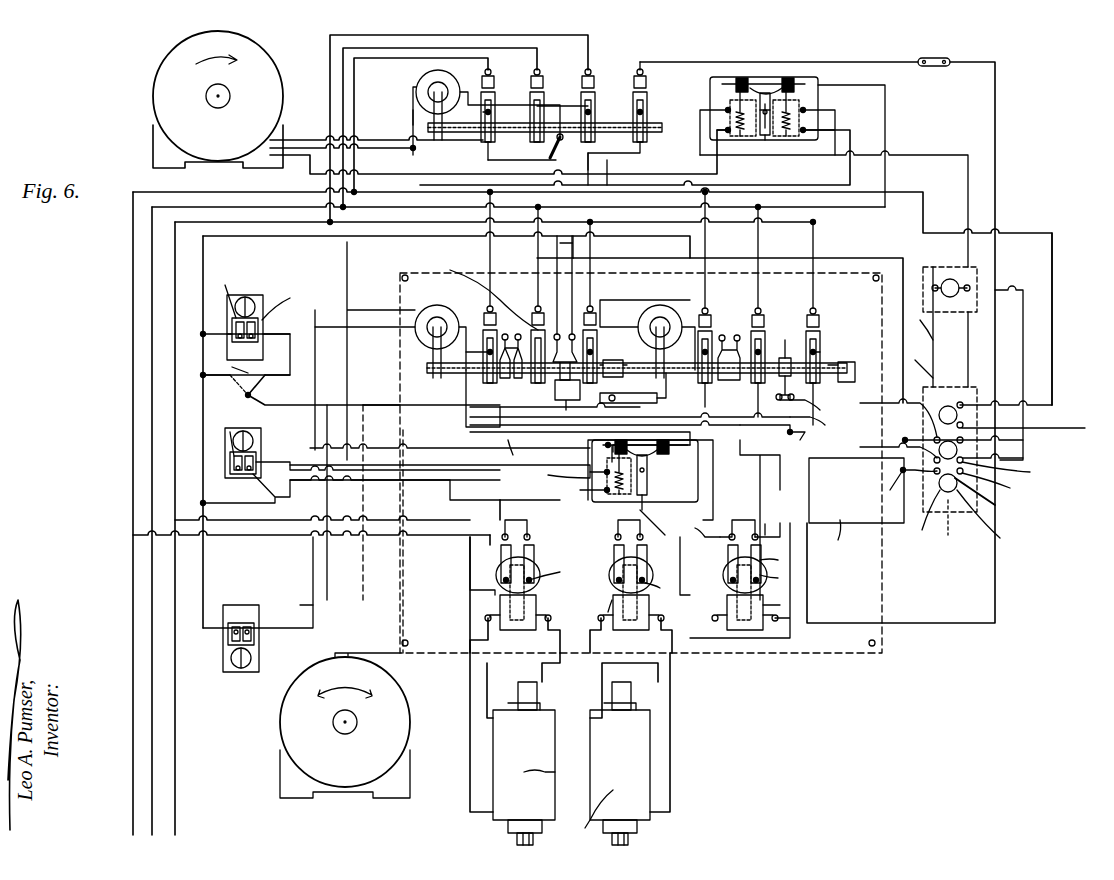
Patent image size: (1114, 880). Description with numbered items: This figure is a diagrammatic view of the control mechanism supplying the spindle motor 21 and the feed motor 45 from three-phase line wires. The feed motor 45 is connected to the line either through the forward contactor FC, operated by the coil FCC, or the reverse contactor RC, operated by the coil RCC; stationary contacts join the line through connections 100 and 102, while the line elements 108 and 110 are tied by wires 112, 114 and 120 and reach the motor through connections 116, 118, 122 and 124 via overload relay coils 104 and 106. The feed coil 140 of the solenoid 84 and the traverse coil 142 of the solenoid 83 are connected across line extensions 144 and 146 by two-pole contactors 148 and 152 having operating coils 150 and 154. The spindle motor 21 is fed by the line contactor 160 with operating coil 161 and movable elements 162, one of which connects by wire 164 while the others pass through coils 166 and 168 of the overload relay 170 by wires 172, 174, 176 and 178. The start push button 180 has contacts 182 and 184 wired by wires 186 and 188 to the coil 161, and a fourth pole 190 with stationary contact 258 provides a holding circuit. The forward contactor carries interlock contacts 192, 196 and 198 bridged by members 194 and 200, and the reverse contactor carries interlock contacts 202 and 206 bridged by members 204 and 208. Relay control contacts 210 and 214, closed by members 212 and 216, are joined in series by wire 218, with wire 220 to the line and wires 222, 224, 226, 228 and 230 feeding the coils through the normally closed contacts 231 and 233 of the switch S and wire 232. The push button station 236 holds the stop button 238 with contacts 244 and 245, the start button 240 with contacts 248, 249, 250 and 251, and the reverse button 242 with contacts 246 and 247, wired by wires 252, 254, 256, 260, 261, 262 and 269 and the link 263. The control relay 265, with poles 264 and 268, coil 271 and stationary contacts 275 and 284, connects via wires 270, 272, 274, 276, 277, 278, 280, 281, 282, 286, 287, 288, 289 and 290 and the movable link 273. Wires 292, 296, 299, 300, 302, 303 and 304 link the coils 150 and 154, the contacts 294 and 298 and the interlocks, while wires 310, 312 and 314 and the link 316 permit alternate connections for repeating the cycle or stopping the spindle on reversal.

The spindle motor 21 is at (218, 99).
The feed motor 45 is at (284, 722).
The traverse solenoid 83 is at (620, 763).
The feed solenoid 84 is at (525, 763).
The connection 100 is at (577, 351).
The connection 102 is at (720, 299).
The overload relay coil 104 is at (580, 496).
The overload relay coil 106 is at (660, 458).
The first line element 108 is at (476, 345).
The first line element 110 is at (723, 320).
The connection 112 is at (484, 408).
The wire 114 is at (624, 372).
The connection 116 is at (728, 480).
The connection 118 is at (683, 545).
The wire 120 is at (612, 403).
The connection 122 is at (548, 464).
The connection 124 is at (530, 497).
The feed coil 140 is at (553, 771).
The traverse coil 142 is at (591, 816).
The line extension 144 is at (228, 536).
The line extension 146 is at (270, 522).
The two-pole contactor 148 is at (554, 566).
The operating coil 150 is at (530, 562).
The two-pole contactor 152 is at (665, 585).
The operating coil 154 is at (645, 562).
The line contactor 160 is at (494, 100).
The operating coil 161 is at (418, 72).
The movable element 162 is at (505, 114).
The wire 164 is at (478, 133).
The overload relay coil 166 is at (822, 122).
The overload relay coil 168 is at (758, 138).
The overload relay 170 is at (818, 98).
The wire 172 is at (522, 162).
The wire 174 is at (590, 172).
The wire 176 is at (602, 161).
The wire 178 is at (704, 144).
The start push button 180 is at (945, 300).
The contact 182 is at (950, 316).
The contact 184 is at (967, 300).
The wire 186 is at (925, 160).
The wire 188 is at (598, 102).
The fourth pole 190 is at (647, 101).
The interlock contacts 192 is at (555, 392).
The member 194 is at (593, 350).
The interlock contacts 196 is at (575, 330).
The interlock contacts 198 is at (505, 378).
The member 200 is at (518, 380).
The interlock contacts 202 is at (818, 408).
The member 204 is at (788, 369).
The interlock contacts 206 is at (722, 335).
The member 208 is at (740, 328).
The control contacts 210 is at (644, 510).
The member 212 is at (650, 428).
The control contacts 214 is at (748, 78).
The member 216 is at (770, 90).
The wire 218 is at (690, 238).
The wire 220 is at (897, 108).
The wire 222 is at (409, 455).
The wire 224 is at (413, 108).
The wire 226 is at (203, 568).
The wire 228 is at (313, 605).
The wire 230 is at (212, 332).
The contact 231 is at (224, 295).
The wire 232 is at (290, 334).
The contact 233 is at (289, 301).
The push button station 236 is at (954, 525).
The stop push button 238 is at (948, 406).
The start push button 240 is at (996, 482).
The reverse push button 242 is at (991, 517).
The stop button contact 244 is at (960, 402).
The stop button contact 245 is at (963, 425).
The reverse button contact 246 is at (922, 519).
The reverse button contact 247 is at (990, 496).
The start button contact 248 is at (1023, 451).
The start button contact 249 is at (896, 451).
The start button contact 250 is at (1010, 470).
The start button contact 251 is at (906, 426).
The wire 252 is at (1048, 233).
The wire 254 is at (1029, 425).
The wire 256 is at (919, 334).
The stationary contact 258 is at (647, 77).
The wire 260 is at (1023, 436).
The wire 261 is at (995, 150).
The wire 262 is at (685, 62).
The link 263 is at (936, 70).
The pole 264 is at (782, 576).
The control relay 265 is at (747, 580).
The pole 268 is at (730, 570).
The wire 269 is at (1035, 278).
The wire 270 is at (810, 472).
The operating coil 271 is at (782, 561).
The wire 272 is at (374, 406).
The movable link 273 is at (258, 384).
The wire 274 is at (246, 367).
The stationary contact 275 is at (710, 529).
The wire 276 is at (763, 545).
The wire 277 is at (848, 522).
The wire 278 is at (916, 484).
The wire 280 is at (919, 363).
The wire 281 is at (677, 266).
The wire 282 is at (481, 291).
The stationary contact 284 is at (788, 520).
The wire 286 is at (768, 465).
The wire 287 is at (785, 437).
The wire 288 is at (569, 466).
The wire 289 is at (765, 524).
The wire 290 is at (630, 415).
The wire 292 is at (478, 585).
The contact 294 is at (227, 434).
The wire 296 is at (486, 500).
The contact 298 is at (260, 460).
The wire 299 is at (572, 247).
The wire 300 is at (562, 330).
The wire 302 is at (598, 583).
The wire 303 is at (660, 525).
The wire 304 is at (522, 446).
The wire 310 is at (228, 380).
The wire 312 is at (560, 140).
The wire 314 is at (556, 213).
The link 316 is at (550, 158).
The switch S is at (245, 312).
The forward contactor FC is at (433, 392).
The forward contactor coil FCC is at (437, 305).
The reverse contactor RC is at (836, 311).
The reverse contactor coil RCC is at (660, 305).